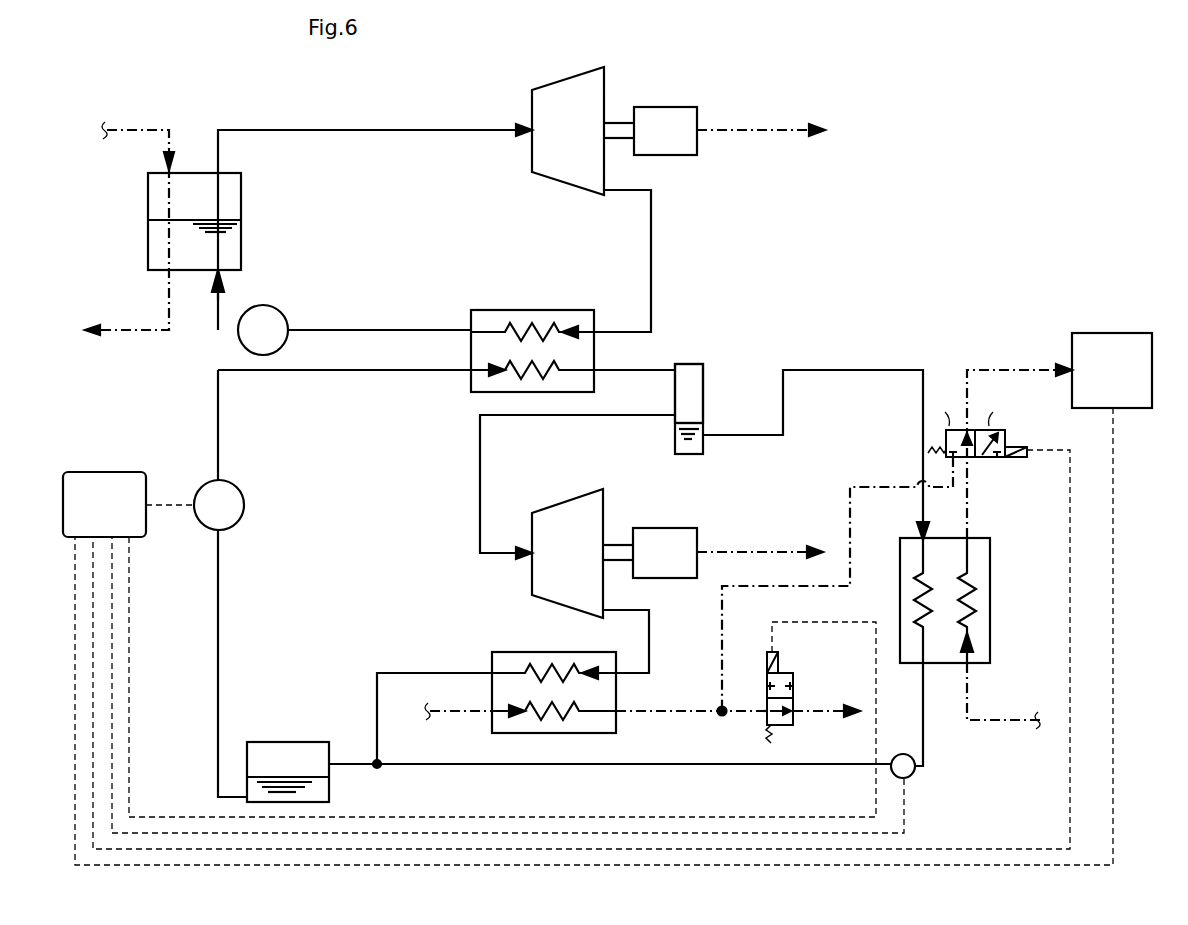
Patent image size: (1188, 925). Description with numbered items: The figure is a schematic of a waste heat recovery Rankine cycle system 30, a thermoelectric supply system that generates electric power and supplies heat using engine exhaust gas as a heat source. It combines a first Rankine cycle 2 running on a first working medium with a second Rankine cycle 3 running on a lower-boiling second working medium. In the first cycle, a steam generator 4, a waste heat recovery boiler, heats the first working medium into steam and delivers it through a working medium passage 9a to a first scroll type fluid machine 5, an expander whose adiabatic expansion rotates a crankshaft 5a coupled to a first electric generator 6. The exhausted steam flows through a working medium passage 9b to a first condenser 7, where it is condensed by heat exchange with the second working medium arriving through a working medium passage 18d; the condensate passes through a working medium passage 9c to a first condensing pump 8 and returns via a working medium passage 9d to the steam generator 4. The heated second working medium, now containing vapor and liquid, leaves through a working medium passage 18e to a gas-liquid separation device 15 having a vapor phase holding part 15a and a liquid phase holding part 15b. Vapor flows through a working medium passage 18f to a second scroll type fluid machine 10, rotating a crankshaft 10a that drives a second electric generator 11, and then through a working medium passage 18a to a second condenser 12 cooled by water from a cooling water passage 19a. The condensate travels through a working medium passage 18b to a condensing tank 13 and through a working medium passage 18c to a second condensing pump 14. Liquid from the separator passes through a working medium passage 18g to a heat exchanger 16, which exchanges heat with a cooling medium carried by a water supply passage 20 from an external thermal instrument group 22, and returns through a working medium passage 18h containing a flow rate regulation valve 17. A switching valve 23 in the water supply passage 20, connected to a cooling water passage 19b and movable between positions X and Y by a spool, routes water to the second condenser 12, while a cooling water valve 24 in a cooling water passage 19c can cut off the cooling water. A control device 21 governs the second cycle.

The first Rankine cycle 2 is at (734, 218).
The second Rankine cycle 3 is at (874, 304).
The steam generator 4 is at (242, 197).
The first scroll type fluid machine 5 is at (580, 137).
The crankshaft 5a is at (620, 120).
The first electric generator 6 is at (678, 145).
The first condenser 7 is at (478, 310).
The first condensing pump 8 is at (272, 347).
The working medium passage 9a is at (368, 138).
The working medium passage 9b is at (652, 237).
The working medium passage 9c is at (401, 326).
The working medium passage 9d is at (222, 292).
The second scroll type fluid machine 10 is at (580, 560).
The crankshaft 10a is at (620, 540).
The second electric generator 11 is at (676, 567).
The second condenser 12 is at (498, 650).
The condensing tank 13 is at (280, 744).
The second condensing pump 14 is at (229, 516).
The gas-liquid separation device 15 is at (689, 350).
The vapor phase holding part 15a is at (704, 385).
The liquid phase holding part 15b is at (702, 450).
The heat exchanger 16 is at (900, 548).
The flow rate regulation valve 17 is at (912, 776).
The working medium passage 18a is at (650, 646).
The working medium passage 18b is at (418, 670).
The working medium passage 18c is at (219, 621).
The working medium passage 18d is at (219, 457).
The working medium passage 18e is at (625, 374).
The working medium passage 18f is at (480, 491).
The working medium passage 18g is at (826, 374).
The working medium passage 18h is at (924, 758).
The cooling water passage 19a is at (462, 718).
The cooling water passage 19b is at (844, 516).
The cooling water passage 19c is at (826, 718).
The water supply passage 20 is at (999, 366).
The control device 21 is at (116, 520).
The external thermal instrument group 22 is at (1122, 388).
The switching valve 23 is at (1014, 464).
The cooling water valve 24 is at (792, 652).
The waste heat recovery Rankine cycle system 30 is at (624, 466).